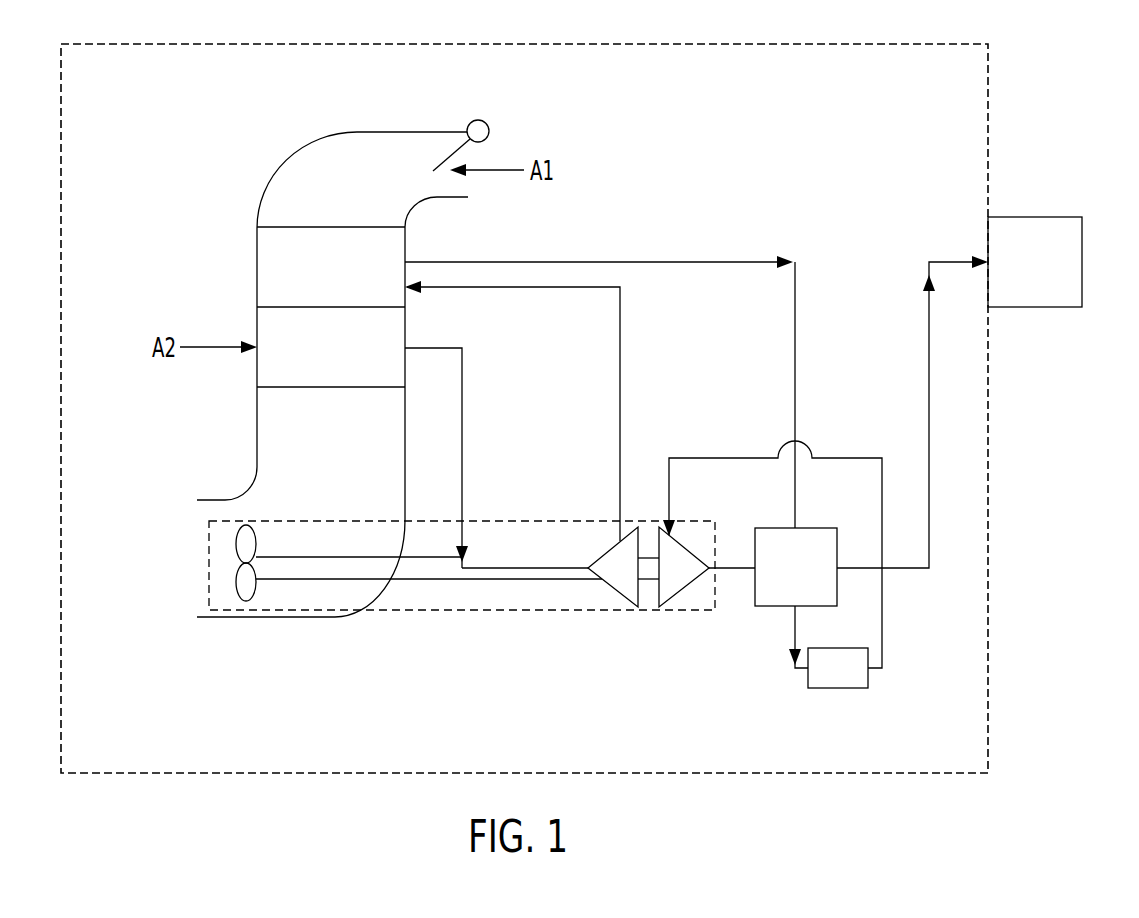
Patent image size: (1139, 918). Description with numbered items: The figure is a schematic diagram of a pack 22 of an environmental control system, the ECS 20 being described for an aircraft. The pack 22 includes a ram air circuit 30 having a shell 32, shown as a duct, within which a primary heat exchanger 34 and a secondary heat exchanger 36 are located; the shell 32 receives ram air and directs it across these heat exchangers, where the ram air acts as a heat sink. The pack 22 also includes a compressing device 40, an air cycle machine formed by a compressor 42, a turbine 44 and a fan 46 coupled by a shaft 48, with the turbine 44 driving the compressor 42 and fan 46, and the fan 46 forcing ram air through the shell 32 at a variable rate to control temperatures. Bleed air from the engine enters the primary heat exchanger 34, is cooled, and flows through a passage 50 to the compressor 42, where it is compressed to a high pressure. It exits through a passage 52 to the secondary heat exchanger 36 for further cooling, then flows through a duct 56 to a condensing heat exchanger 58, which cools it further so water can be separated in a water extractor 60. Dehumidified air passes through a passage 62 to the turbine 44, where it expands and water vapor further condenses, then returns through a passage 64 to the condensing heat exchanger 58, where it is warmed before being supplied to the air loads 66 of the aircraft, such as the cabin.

The environmental control system 20 is at (1002, 106).
The pack 22 is at (705, 184).
The ram air circuit 30 is at (228, 480).
The shell 32 is at (300, 146).
The primary heat exchanger 34 is at (268, 331).
The secondary heat exchanger 36 is at (268, 272).
The compressing device 40 is at (473, 628).
The compressor 42 is at (612, 590).
The turbine 44 is at (677, 597).
The fan 46 is at (240, 600).
The shaft 48 is at (420, 568).
The passage 50 is at (462, 380).
The passage 52 is at (620, 408).
The duct 56 is at (795, 358).
The condensing heat exchanger 58 is at (832, 528).
The water extractor 60 is at (838, 688).
The passage 62 is at (705, 458).
The passage 64 is at (750, 570).
The air loads 66 is at (1052, 230).